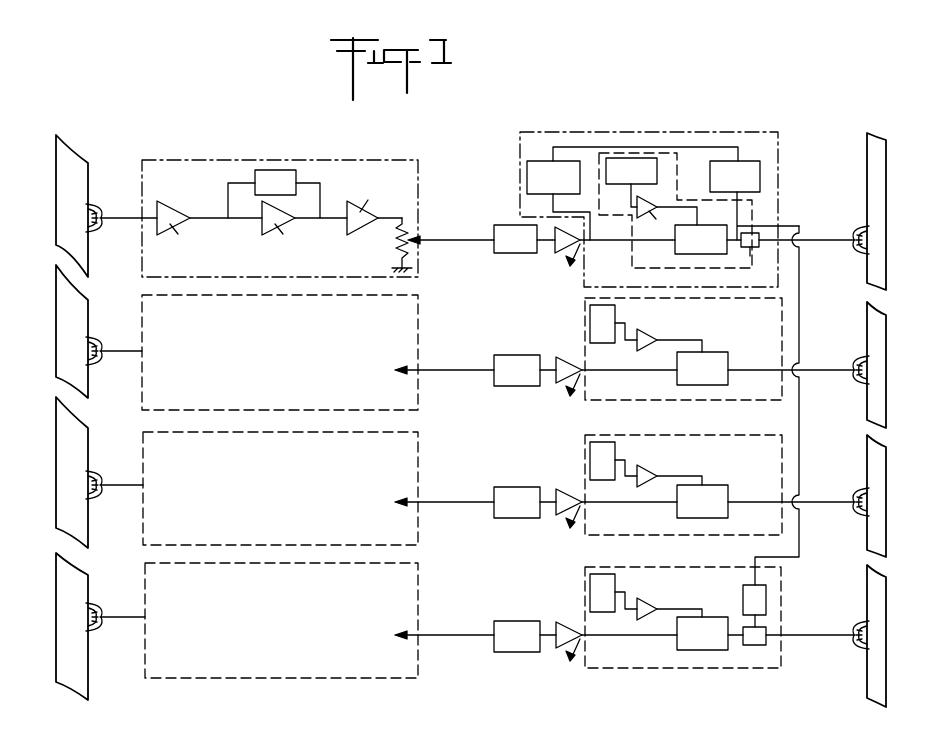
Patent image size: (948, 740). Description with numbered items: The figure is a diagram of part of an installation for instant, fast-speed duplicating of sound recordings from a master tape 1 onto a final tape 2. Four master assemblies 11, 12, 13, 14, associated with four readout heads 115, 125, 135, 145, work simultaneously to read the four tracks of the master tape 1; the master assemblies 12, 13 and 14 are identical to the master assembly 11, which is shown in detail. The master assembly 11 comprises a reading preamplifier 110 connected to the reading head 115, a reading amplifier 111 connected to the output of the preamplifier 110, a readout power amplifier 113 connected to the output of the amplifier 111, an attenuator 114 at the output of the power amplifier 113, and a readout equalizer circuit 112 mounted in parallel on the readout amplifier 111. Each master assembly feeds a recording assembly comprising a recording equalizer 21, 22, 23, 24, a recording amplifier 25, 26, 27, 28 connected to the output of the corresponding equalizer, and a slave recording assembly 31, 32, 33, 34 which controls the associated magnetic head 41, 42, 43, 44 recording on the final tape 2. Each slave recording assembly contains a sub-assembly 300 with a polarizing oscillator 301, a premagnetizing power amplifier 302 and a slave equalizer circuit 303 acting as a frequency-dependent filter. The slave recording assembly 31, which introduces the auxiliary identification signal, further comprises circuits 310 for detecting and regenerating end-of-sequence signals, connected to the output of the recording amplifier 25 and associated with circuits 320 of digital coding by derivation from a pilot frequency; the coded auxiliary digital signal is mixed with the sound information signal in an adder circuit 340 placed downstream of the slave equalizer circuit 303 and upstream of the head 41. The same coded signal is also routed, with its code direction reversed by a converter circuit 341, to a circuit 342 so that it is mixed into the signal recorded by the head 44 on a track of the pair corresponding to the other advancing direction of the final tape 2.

The master tape 1 is at (62, 176).
The final tape 2 is at (880, 168).
The master assembly 11 is at (318, 199).
The master assembly 12 is at (175, 391).
The master assembly 13 is at (190, 520).
The master assembly 14 is at (168, 658).
The recording equalizer circuit 21 is at (524, 239).
The recording equalizer 22 is at (525, 370).
The recording equalizer 23 is at (525, 502).
The recording equalizer 24 is at (525, 636).
The recording amplifier 25 is at (557, 245).
The recording amplifier 26 is at (568, 356).
The recording amplifier 27 is at (568, 488).
The recording amplifier 28 is at (569, 622).
The slave recording assembly 31 is at (687, 189).
The slave recording assembly 32 is at (665, 333).
The slave recording assembly 33 is at (665, 466).
The slave recording assembly 34 is at (660, 600).
The magnetic head 41 is at (856, 228).
The magnetic head 42 is at (857, 358).
The magnetic head 43 is at (857, 492).
The magnetic head 44 is at (857, 626).
The reading preamplifier 110 is at (209, 235).
The reading amplifier 111 is at (304, 235).
The readout equalizer circuit 112 is at (275, 172).
The readout power amplifier 113 is at (363, 204).
The attenuator 114 is at (398, 246).
The reading head 115 is at (120, 197).
The readout head 125 is at (117, 332).
The readout head 135 is at (118, 469).
The readout head 145 is at (116, 601).
The sub-assembly 300 is at (675, 179).
The polarizing oscillator 301 is at (631, 182).
The premagnetizing power amplifier 302 is at (667, 220).
The slave equalizer circuit 303 is at (708, 239).
The circuits for detecting and regenerating end-of-sequence signals 310 is at (632, 193).
The digital coding circuits 320 is at (754, 200).
The adder circuit 340 is at (796, 255).
The converter circuit 341 is at (757, 600).
The circuit 342 is at (755, 645).